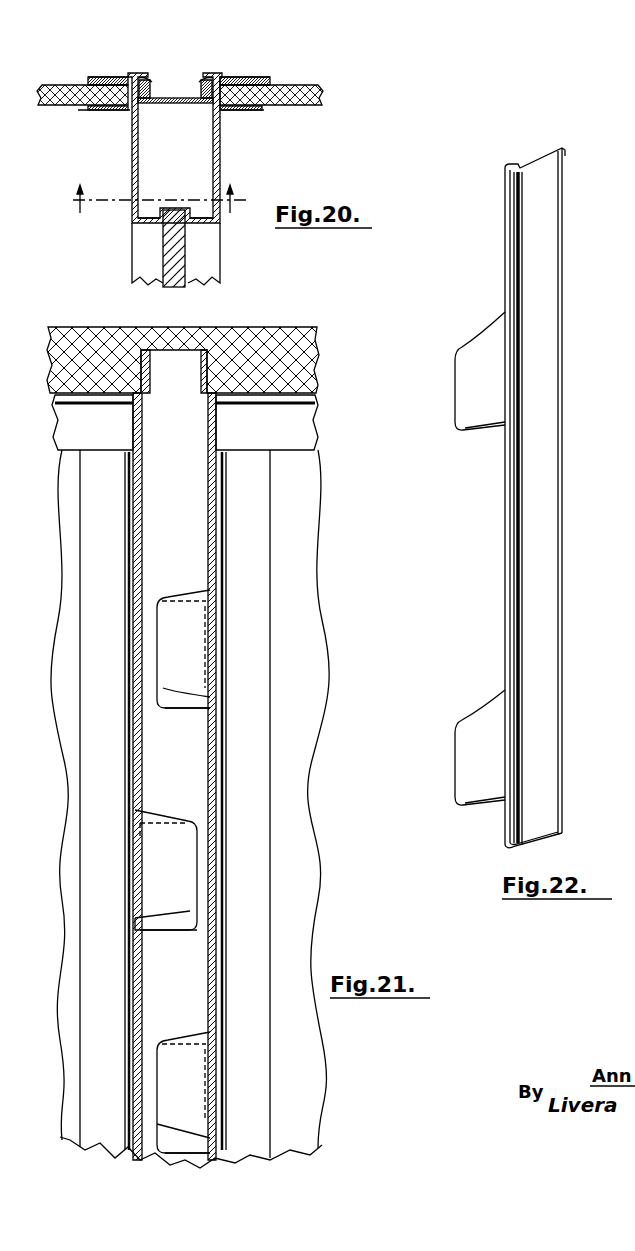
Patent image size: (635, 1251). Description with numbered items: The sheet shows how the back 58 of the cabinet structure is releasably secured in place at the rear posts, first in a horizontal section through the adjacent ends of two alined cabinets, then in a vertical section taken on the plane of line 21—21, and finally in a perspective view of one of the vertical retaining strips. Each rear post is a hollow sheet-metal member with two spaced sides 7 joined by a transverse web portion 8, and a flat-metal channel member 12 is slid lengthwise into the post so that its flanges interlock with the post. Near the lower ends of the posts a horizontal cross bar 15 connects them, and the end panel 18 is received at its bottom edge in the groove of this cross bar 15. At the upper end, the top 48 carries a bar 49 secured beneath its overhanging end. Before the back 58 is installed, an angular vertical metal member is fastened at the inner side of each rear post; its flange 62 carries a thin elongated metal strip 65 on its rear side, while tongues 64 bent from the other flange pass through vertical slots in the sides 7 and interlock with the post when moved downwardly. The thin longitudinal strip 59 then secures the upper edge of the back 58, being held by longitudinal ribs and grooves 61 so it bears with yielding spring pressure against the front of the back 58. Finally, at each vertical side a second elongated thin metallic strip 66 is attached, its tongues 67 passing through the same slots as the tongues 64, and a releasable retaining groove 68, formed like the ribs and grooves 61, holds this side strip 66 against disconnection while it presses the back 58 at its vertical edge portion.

In FIG. 20, the sides of post 7 is at (132, 152).
In FIG. 21, the sides of post 7 is at (208, 748).
In FIG. 20, the transverse web portion 8 is at (138, 223).
In FIG. 20, the channel member 12 is at (197, 106).
In FIG. 20, the horizontal cross bar 15 is at (135, 250).
In FIG. 20, the end panel 18 is at (175, 268).
In FIG. 20, the section line 21— 21 is at (155, 199).
In FIG. 21, the top 48 is at (75, 348).
In FIG. 21, the bar 49 is at (150, 374).
In FIG. 20, the back 58 is at (70, 97).
In FIG. 21, the back 58 is at (320, 682).
In FIG. 21, the longitudinal strip 59 is at (316, 420).
In FIG. 21, the longitudinal ribs and grooves 61 is at (92, 405).
In FIG. 20, the flange 62 is at (84, 79).
In FIG. 20, the tongues 64 is at (178, 97).
In FIG. 21, the tongues 64 is at (180, 708).
In FIG. 20, the thin elongated metal strip 65 is at (104, 78).
In FIG. 20, the second elongated thin metallic strip 66 is at (96, 111).
In FIG. 21, the second elongated thin metallic strip 66 is at (82, 620).
In FIG. 22, the second elongated thin metallic strip 66 is at (546, 696).
In FIG. 20, the tongues 67 is at (156, 100).
In FIG. 21, the tongues 67 is at (179, 612).
In FIG. 22, the tongues 67 is at (482, 424).
In FIG. 20, the releasable retaining groove 68 is at (128, 110).
In FIG. 21, the releasable retaining groove 68 is at (224, 661).
In FIG. 22, the releasable retaining groove 68 is at (517, 556).